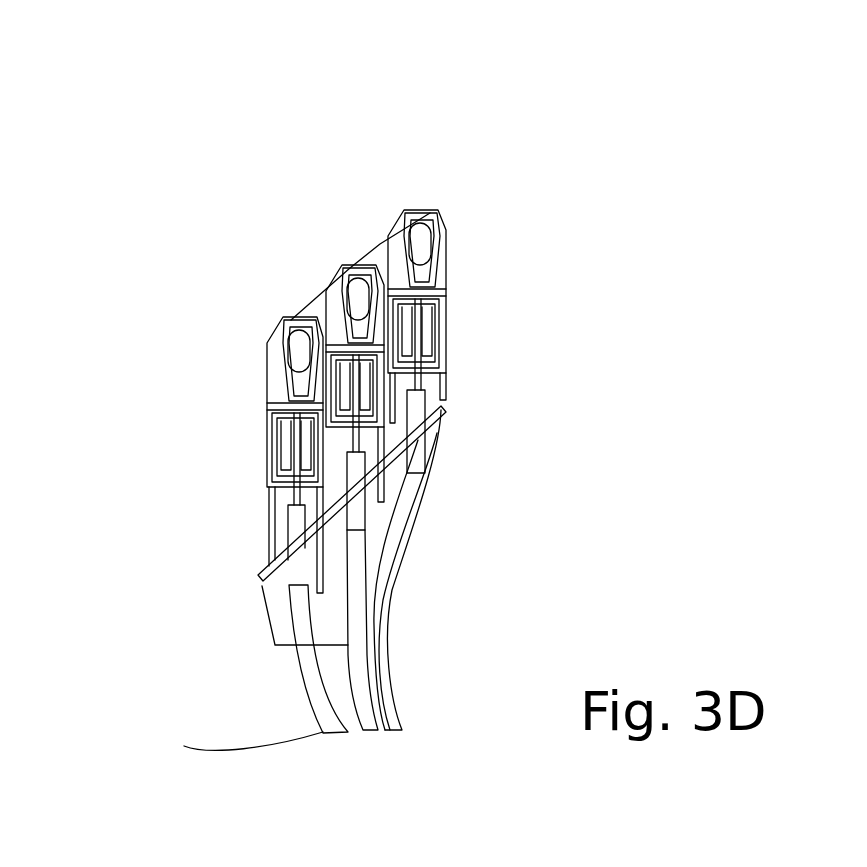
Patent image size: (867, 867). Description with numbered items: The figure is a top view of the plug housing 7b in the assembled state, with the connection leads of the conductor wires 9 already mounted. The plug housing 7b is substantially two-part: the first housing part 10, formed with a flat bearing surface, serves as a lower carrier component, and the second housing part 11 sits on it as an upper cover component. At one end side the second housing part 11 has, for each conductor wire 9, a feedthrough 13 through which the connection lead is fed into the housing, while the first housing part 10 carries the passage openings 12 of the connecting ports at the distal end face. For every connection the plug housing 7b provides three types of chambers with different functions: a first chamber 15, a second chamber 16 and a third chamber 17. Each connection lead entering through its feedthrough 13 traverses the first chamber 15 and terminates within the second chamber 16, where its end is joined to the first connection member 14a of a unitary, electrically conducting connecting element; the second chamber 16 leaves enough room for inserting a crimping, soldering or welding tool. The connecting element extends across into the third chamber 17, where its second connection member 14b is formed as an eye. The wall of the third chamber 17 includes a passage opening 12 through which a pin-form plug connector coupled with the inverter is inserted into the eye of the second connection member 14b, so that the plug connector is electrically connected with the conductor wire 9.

The plug housing 7b is at (517, 149).
The conductor wire 9 is at (358, 628).
The first housing part 10 is at (360, 508).
The second housing part 11 is at (270, 518).
The passage opening 12 is at (292, 353).
The feedthrough 13 is at (290, 590).
The first connection member 14a is at (283, 456).
The second connection member 14b is at (292, 318).
The first chamber 15 is at (283, 497).
The second chamber 16 is at (283, 433).
The third chamber 17 is at (292, 368).